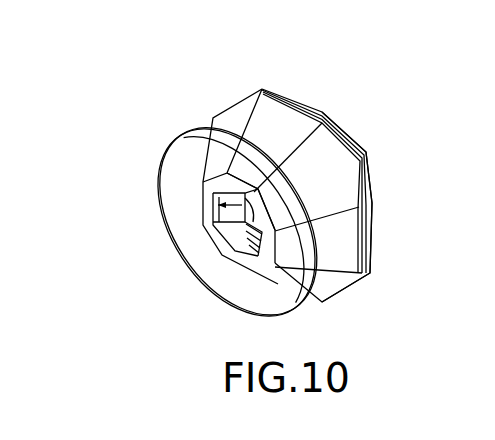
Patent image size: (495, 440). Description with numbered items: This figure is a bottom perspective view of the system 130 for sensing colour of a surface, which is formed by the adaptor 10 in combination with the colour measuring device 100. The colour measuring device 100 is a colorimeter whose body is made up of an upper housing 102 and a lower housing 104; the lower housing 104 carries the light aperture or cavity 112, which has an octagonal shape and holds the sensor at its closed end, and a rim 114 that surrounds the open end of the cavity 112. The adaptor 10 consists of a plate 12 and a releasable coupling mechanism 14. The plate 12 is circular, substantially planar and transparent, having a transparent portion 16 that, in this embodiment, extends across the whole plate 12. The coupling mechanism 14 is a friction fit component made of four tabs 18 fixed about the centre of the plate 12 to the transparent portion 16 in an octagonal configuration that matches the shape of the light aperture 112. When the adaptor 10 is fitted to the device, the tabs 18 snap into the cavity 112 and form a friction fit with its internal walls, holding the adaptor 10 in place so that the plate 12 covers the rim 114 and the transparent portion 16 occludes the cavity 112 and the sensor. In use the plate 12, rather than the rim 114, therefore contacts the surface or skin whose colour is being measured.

The system 130 is at (185, 87).
The colour measuring device 100 is at (318, 95).
The upper housing 102 is at (355, 157).
The lower housing 104 is at (355, 245).
The transparent portion 16 is at (254, 189).
The adaptor 10 is at (176, 267).
The plate 12 is at (176, 188).
The tabs 18 is at (258, 255).
The coupling mechanism 14 is at (241, 263).
The light aperture or cavity 112 is at (212, 210).
The rim 114 is at (212, 189).